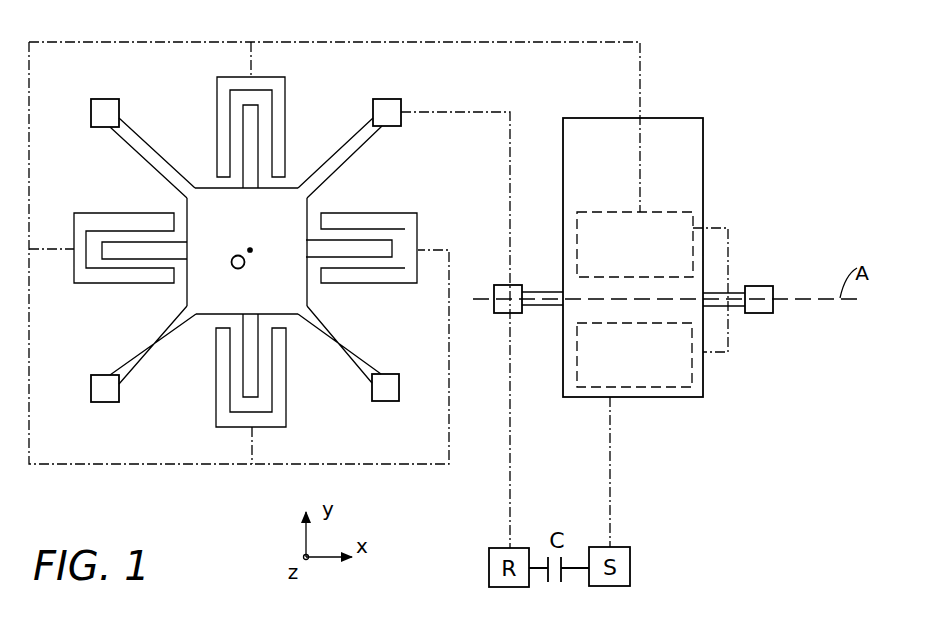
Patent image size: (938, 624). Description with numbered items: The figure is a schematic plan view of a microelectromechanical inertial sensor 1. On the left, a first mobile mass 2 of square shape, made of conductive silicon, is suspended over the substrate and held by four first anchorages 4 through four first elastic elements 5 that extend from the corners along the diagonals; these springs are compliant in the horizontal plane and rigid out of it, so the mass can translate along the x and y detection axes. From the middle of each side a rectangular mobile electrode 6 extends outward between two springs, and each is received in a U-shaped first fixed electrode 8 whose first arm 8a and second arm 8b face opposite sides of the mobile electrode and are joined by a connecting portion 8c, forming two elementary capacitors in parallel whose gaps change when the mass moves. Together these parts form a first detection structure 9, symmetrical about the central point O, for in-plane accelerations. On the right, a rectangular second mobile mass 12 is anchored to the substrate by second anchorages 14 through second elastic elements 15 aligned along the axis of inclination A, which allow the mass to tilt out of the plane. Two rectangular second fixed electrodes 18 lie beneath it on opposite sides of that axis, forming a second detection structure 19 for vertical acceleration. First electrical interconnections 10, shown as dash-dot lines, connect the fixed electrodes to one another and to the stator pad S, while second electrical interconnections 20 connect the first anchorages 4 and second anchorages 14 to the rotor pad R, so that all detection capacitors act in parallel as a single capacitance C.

The inertial sensor 1 is at (675, 93).
The first mobile mass 2 is at (282, 207).
The first anchorages 4 is at (113, 108).
The first elastic elements 5 is at (147, 157).
The mobile electrodes 6 is at (248, 180).
The first fixed electrodes 8 is at (266, 259).
The first arm 8a is at (373, 222).
The second arm 8b is at (392, 278).
The connecting portion 8c is at (413, 230).
The first detection structure 9 is at (212, 482).
The first electrical interconnections 10 is at (330, 37).
The second mobile mass 12 is at (695, 133).
The second anchorages 14 is at (497, 293).
The second elastic elements 15 is at (537, 297).
The second fixed electrodes 18 is at (687, 212).
The second detection structure 19 is at (648, 410).
The second electrical interconnections 20 is at (475, 110).